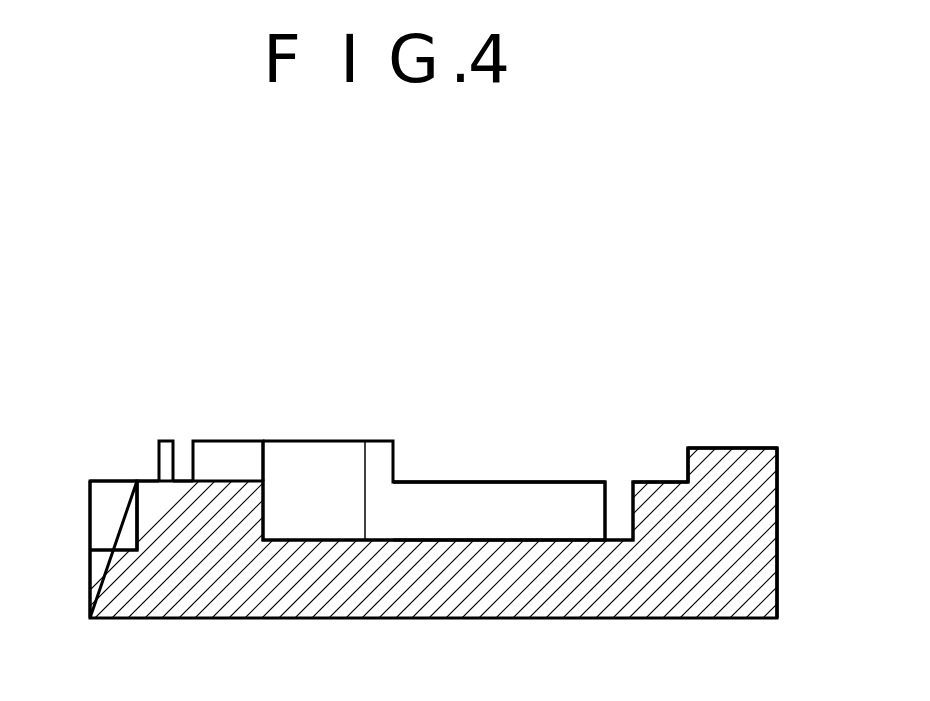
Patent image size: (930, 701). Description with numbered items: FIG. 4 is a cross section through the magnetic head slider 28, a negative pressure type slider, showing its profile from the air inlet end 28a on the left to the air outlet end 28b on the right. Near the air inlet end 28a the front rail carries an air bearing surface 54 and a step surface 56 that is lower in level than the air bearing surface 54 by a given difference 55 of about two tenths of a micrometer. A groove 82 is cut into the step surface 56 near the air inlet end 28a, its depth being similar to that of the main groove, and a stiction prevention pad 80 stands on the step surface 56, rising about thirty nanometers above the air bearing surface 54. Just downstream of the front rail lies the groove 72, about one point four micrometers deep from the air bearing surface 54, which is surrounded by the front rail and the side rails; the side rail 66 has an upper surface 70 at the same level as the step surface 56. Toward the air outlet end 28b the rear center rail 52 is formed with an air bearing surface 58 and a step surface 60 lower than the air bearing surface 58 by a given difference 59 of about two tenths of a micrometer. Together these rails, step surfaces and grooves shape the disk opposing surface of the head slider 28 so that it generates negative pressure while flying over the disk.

The magnetic head slider 28 is at (322, 424).
The air inlet end 28a is at (90, 522).
The air outlet end 28b is at (777, 563).
The rear center rail 52 is at (768, 475).
The air bearing surface 54 is at (237, 441).
The difference 55 is at (190, 462).
The step surface 56 is at (135, 482).
The air bearing surface 58 is at (725, 448).
The difference 59 is at (680, 468).
The step surface 60 is at (634, 478).
The side rail 66 is at (563, 507).
The upper surface 70 is at (485, 482).
The groove 72 is at (423, 540).
The stiction prevention pad 80 is at (162, 442).
The groove 82 is at (112, 549).